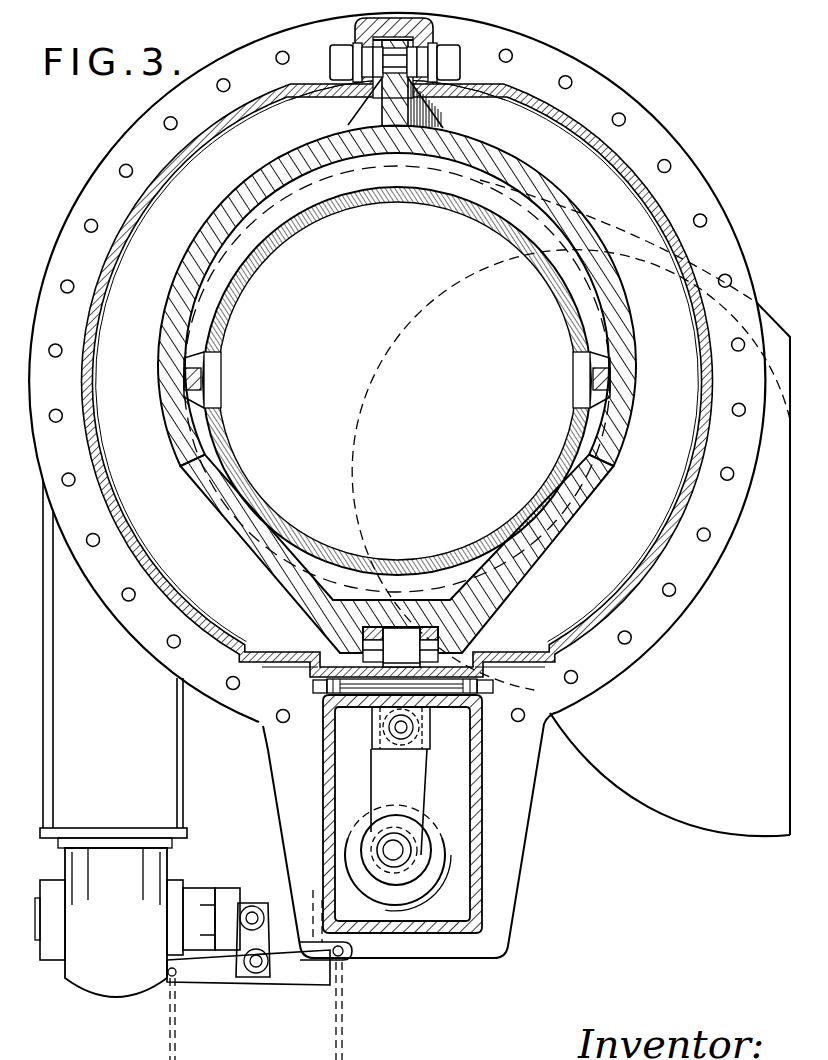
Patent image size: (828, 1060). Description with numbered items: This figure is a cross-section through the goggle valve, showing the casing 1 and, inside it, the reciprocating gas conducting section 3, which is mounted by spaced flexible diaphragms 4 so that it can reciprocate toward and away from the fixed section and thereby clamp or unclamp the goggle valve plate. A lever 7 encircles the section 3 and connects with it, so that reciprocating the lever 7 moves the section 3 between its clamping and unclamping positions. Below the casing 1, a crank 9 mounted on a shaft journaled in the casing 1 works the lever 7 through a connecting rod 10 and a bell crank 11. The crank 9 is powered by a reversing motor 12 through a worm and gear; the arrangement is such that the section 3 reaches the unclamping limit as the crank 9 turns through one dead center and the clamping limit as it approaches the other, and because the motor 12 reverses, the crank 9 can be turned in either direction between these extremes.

The casing 1 is at (627, 162).
The reciprocating gas conducting section 3 is at (285, 233).
The diaphragms 4 is at (561, 138).
The lever 7 is at (167, 372).
The crank 9 is at (417, 860).
The connecting rod 10 is at (413, 780).
The bell crank 11 is at (377, 713).
The reversing motor 12 is at (118, 987).